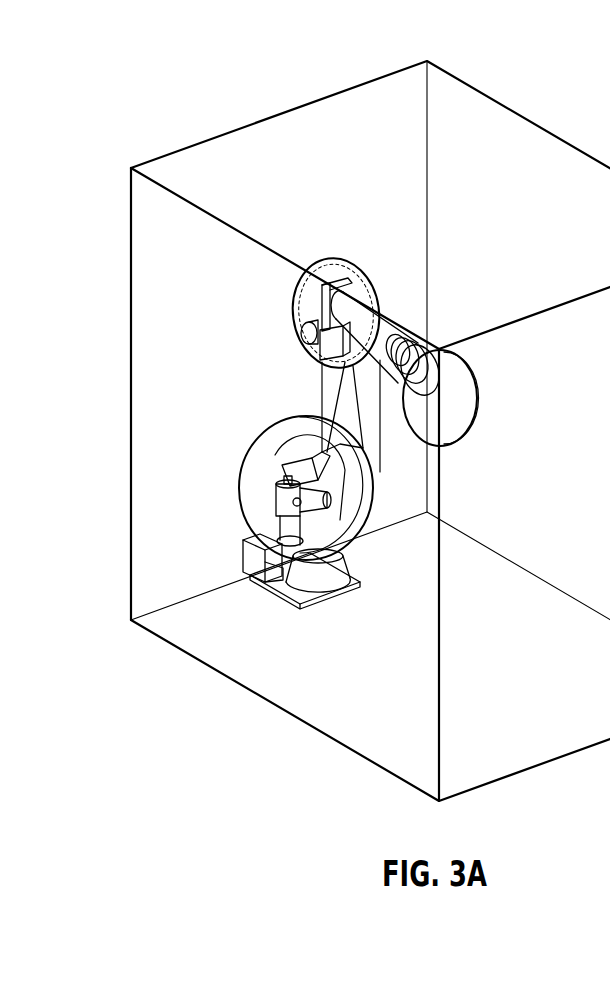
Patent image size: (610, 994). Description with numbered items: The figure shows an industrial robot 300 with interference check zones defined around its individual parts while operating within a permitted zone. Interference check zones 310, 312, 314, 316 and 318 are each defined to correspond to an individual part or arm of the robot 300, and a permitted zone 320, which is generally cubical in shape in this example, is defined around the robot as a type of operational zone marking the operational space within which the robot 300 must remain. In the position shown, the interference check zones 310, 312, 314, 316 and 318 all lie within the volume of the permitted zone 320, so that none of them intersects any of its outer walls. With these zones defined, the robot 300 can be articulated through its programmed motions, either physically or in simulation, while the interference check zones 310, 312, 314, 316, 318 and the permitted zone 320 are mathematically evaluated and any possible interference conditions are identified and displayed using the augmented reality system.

The industrial robot 300 is at (326, 246).
The interference check zone 310 is at (263, 435).
The interference check zone 312 is at (320, 392).
The interference check zone 314 is at (293, 307).
The interference check zone 316 is at (404, 324).
The interference check zone 318 is at (477, 400).
The permitted zone 320 is at (295, 676).